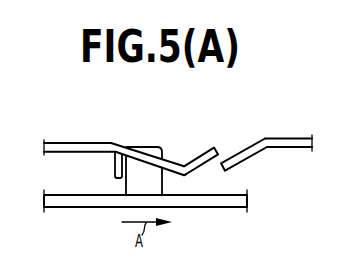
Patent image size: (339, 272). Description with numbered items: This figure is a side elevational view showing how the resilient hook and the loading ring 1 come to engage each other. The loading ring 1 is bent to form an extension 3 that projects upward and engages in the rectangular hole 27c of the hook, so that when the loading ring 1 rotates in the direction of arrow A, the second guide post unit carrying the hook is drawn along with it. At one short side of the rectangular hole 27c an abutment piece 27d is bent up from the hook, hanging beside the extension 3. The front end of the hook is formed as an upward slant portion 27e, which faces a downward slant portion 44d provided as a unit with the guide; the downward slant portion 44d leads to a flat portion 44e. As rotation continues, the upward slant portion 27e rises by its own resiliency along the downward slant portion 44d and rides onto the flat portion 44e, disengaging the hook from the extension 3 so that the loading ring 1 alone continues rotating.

The loading ring 1 is at (212, 204).
The extension 3 is at (158, 144).
The rectangular hole 27c is at (143, 150).
The abutment piece 27d is at (115, 172).
The upward slant portion 27e is at (207, 150).
The downward slant portion 44d is at (255, 158).
The flat portion 44e is at (298, 148).